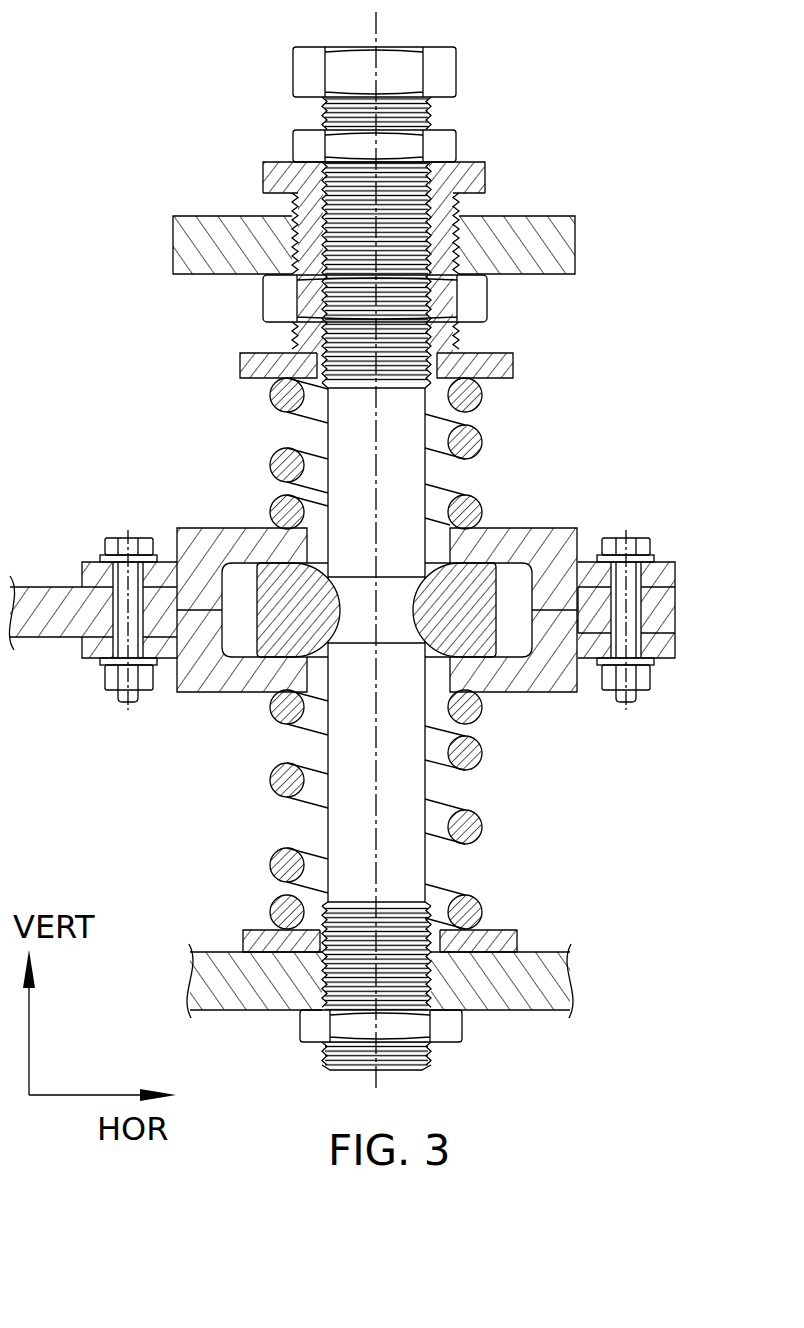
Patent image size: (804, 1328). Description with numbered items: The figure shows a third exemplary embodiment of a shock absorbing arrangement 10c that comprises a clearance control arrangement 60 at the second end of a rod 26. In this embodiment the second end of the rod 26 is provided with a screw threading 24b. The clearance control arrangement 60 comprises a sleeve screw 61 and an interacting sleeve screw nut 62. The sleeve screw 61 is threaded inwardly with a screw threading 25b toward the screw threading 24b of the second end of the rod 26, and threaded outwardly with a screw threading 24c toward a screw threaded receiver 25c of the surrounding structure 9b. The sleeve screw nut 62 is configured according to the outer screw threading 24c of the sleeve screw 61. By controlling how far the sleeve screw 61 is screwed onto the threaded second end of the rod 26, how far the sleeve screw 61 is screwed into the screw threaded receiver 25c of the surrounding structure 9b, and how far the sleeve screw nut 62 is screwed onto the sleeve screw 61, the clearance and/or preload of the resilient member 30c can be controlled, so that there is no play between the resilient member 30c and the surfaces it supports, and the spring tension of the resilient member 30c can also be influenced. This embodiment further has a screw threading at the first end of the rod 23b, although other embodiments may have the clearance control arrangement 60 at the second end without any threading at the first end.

The shock absorbing arrangement 10c is at (346, 555).
The rod 26 is at (381, 104).
The screw threading 24b is at (430, 120).
The screw threading 25b is at (433, 228).
The screw threading 24c is at (456, 227).
The screw threaded receiver 25c is at (447, 242).
The clearance control arrangement 60 is at (462, 216).
The surrounding structure 9b is at (533, 242).
The sleeve screw 61 is at (440, 252).
The sleeve screw nut 62 is at (470, 298).
The resilient member 30c is at (510, 451).
The first end of the rod 23b is at (480, 1028).